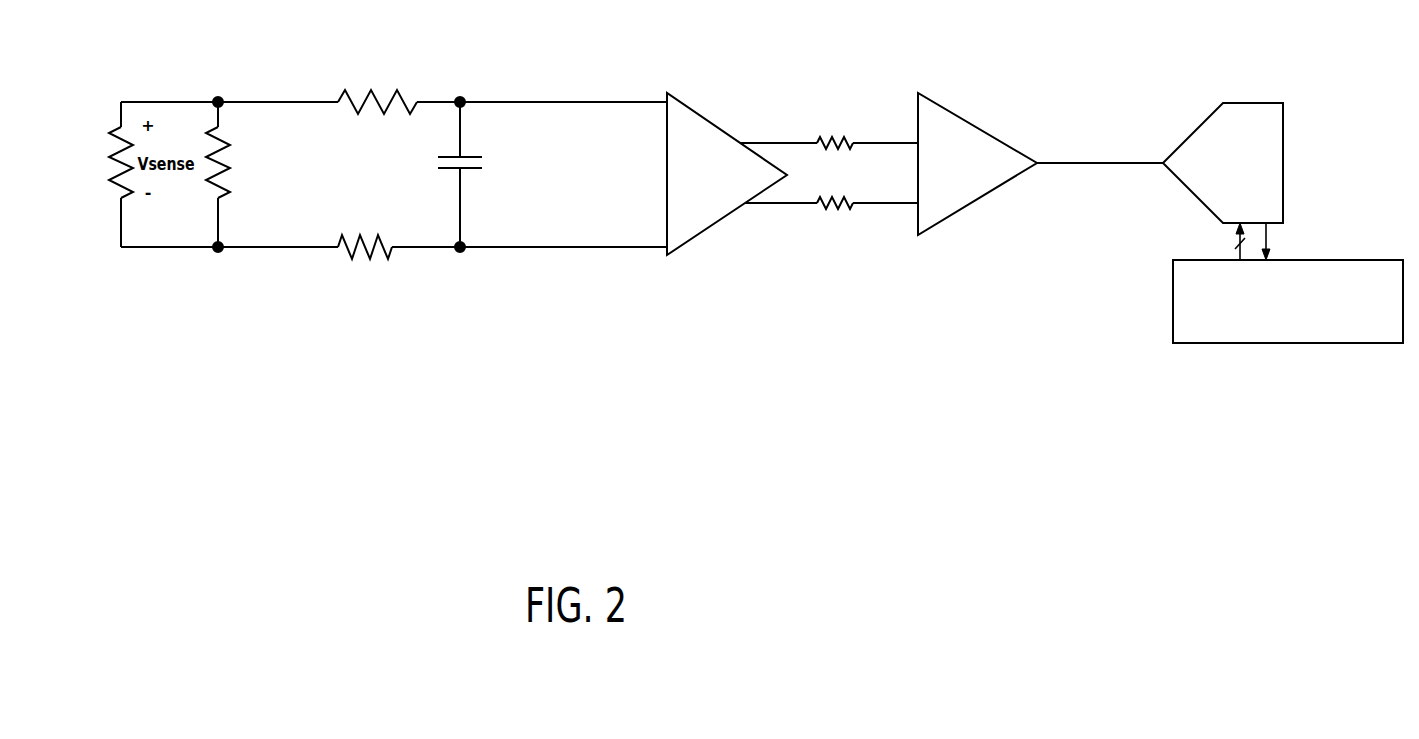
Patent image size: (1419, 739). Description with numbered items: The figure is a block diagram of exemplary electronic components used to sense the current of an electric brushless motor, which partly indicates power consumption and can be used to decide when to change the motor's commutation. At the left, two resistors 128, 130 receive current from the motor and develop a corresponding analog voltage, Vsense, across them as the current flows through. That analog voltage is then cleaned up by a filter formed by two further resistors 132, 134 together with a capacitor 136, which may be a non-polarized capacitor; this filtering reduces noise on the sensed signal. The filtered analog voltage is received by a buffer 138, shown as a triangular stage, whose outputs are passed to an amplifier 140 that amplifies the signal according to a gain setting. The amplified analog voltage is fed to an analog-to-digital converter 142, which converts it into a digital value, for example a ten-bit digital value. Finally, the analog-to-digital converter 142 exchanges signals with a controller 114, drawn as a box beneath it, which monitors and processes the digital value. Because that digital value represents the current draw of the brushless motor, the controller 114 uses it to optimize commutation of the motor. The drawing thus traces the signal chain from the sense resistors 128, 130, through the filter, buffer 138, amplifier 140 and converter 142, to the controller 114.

The controller 114 is at (1190, 343).
The resistor 128 is at (110, 174).
The resistor 130 is at (225, 164).
The resistor 132 is at (388, 92).
The resistor 134 is at (368, 257).
The capacitor 136 is at (438, 165).
The buffer 138 is at (703, 113).
The amplifier 140 is at (978, 127).
The analog-to-digital converter 142 is at (1202, 127).